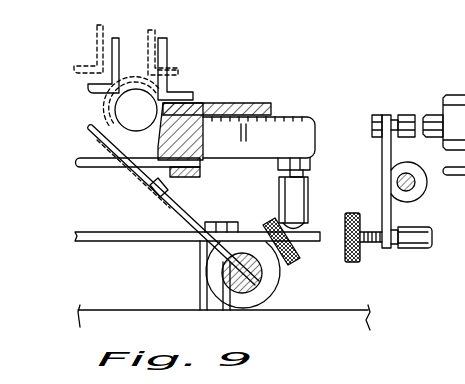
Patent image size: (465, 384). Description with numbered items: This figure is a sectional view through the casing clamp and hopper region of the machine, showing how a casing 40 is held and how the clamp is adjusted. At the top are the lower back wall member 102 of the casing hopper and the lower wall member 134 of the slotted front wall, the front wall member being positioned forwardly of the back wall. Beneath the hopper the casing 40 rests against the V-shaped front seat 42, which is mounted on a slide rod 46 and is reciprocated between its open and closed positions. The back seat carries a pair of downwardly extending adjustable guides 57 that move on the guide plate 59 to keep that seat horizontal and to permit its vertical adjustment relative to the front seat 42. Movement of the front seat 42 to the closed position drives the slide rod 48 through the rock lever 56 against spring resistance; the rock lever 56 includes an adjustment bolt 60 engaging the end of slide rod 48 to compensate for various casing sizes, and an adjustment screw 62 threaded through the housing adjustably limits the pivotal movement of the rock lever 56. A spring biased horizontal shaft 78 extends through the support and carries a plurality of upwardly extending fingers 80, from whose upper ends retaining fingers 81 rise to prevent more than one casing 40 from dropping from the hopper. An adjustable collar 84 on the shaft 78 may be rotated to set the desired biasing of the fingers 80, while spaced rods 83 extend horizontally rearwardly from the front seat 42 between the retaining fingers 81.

The lower back wall member 102 is at (99, 25).
The lower wall member 134 is at (160, 32).
The casing 40 is at (104, 103).
The front seat 42 is at (200, 103).
The adjustable guide 57 is at (285, 125).
The adjustable collar 84 is at (292, 255).
The retaining finger 81 is at (93, 124).
The rod 83 is at (80, 168).
The guide plate 59 is at (115, 236).
The finger 80 is at (183, 241).
The horizontal shaft 78 is at (224, 272).
The rock lever 56 is at (385, 157).
The adjustment bolt 60 is at (390, 115).
The slide rod 48 is at (431, 115).
The adjustment screw 62 is at (348, 262).
The slide rod 46 is at (420, 250).